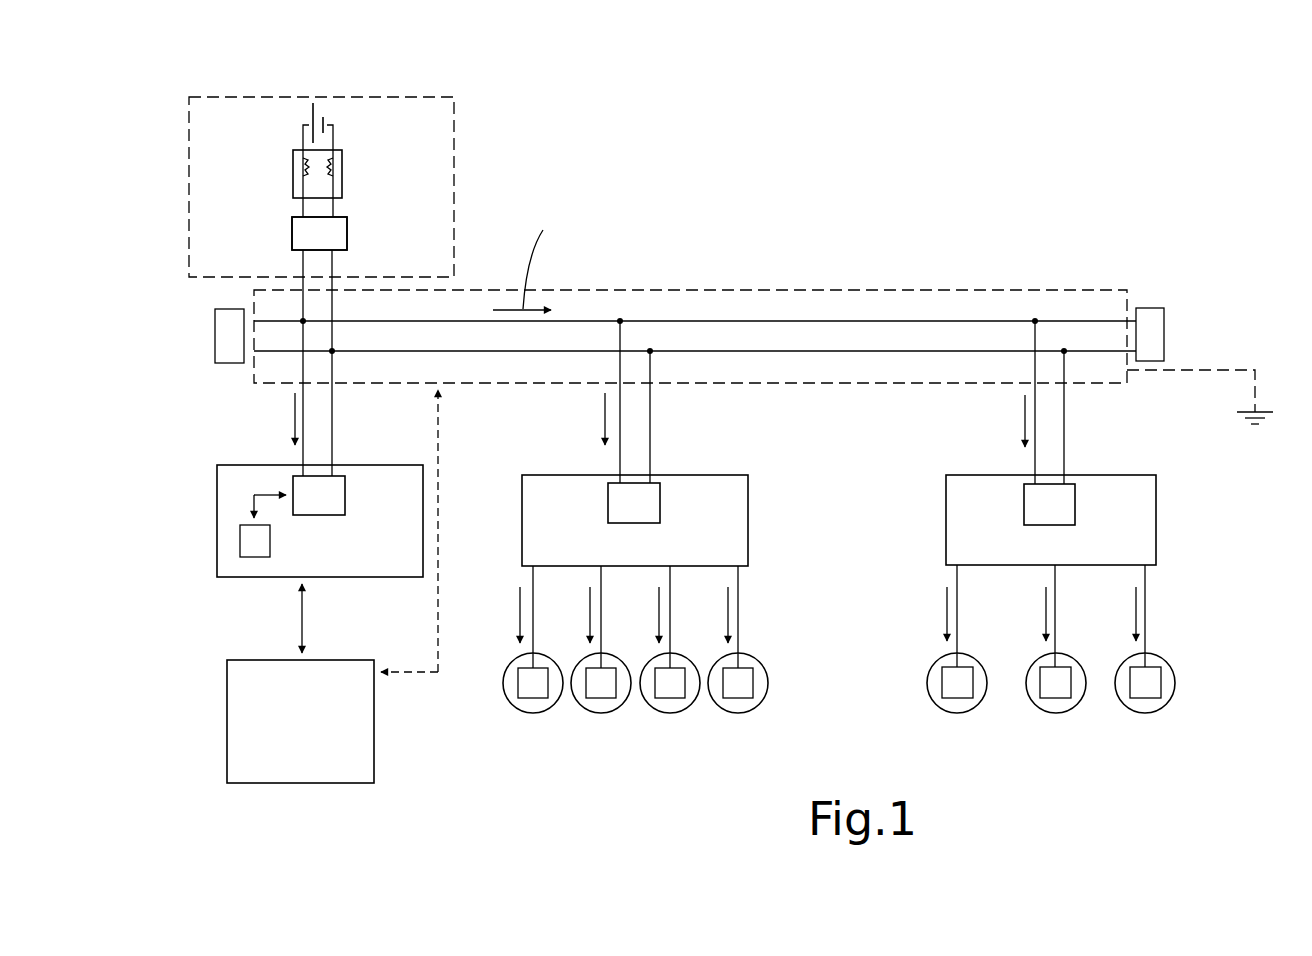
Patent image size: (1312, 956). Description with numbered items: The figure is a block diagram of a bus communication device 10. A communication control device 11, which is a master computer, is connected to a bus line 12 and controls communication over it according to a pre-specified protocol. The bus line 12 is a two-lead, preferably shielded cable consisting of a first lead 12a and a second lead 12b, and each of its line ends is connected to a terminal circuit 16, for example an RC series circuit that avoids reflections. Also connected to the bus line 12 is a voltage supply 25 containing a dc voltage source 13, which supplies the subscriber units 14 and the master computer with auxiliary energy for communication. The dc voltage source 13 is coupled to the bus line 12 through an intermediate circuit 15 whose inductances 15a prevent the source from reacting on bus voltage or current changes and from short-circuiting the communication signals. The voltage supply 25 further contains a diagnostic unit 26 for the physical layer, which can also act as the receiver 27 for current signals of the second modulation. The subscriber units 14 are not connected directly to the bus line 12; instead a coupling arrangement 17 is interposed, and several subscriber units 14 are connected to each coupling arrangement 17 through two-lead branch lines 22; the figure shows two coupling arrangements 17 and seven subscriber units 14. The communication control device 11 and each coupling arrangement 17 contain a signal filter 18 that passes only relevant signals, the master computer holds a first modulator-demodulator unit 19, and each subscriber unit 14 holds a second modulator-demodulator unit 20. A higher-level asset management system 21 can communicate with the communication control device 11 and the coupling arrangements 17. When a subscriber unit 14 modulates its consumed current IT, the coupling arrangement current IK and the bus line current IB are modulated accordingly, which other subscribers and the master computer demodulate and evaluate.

The bus communication device 10 is at (1140, 173).
The communication control device 11 is at (217, 523).
The bus line 12 is at (869, 277).
The first lead 12a is at (929, 320).
The second lead 12b is at (871, 350).
The dc voltage source 13 is at (352, 114).
The subscriber unit 14 is at (533, 713).
The intermediate circuit 15 is at (343, 162).
The inductance 15a is at (343, 168).
The terminal circuit 16 is at (223, 338).
The coupling arrangement 17 is at (733, 507).
The signal filter 18 is at (328, 492).
The first modulator-demodulator unit 19 is at (253, 543).
The second modulator-demodulator unit 20 is at (530, 685).
The asset management system 21 is at (313, 765).
The branch line 22 is at (533, 593).
The voltage supply 25 is at (458, 97).
The diagnostic unit 26 is at (348, 232).
The receiver 27 is at (319, 233).